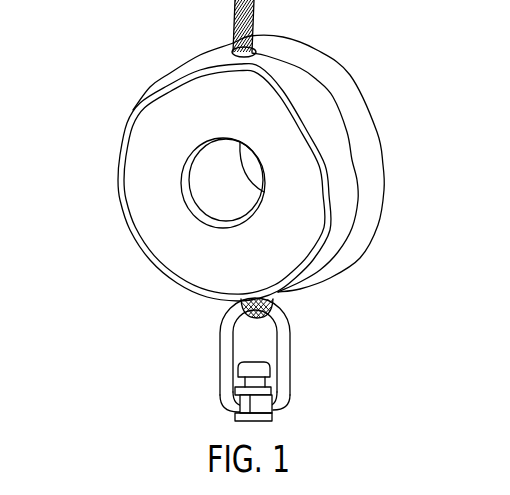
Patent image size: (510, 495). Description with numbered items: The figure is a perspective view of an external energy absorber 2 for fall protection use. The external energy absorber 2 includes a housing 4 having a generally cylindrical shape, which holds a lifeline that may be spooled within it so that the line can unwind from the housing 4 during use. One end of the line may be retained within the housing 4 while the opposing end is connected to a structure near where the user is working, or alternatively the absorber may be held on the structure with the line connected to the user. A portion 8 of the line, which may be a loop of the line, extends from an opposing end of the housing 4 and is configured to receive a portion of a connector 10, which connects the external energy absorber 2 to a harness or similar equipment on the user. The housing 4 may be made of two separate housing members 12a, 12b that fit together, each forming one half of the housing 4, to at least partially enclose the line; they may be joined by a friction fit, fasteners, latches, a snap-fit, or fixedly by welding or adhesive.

The external energy absorber 2 is at (251, 150).
The housing 4 is at (304, 61).
The portion of the line 8 is at (272, 302).
The connector 10 is at (283, 345).
The housing member 12a is at (122, 143).
The housing member 12b is at (383, 166).